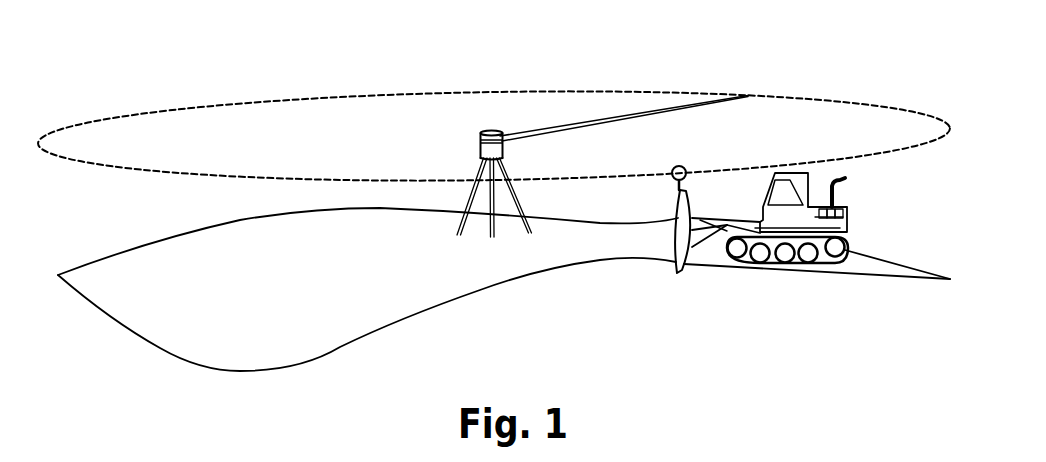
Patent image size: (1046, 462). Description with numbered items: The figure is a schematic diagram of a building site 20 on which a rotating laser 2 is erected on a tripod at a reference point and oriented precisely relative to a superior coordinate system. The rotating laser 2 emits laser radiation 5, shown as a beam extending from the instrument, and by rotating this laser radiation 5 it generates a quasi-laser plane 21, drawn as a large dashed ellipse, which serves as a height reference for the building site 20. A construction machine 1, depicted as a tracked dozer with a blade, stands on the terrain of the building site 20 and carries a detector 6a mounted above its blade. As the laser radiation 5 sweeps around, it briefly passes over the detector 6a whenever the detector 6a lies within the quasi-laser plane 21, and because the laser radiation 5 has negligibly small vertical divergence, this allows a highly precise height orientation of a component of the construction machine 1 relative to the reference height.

The construction machine 1 is at (778, 226).
The rotating laser 2 is at (479, 139).
The laser radiation 5 is at (608, 119).
The detector 6a is at (681, 166).
The building site 20 is at (291, 293).
The quasi-laser plane 21 is at (272, 97).